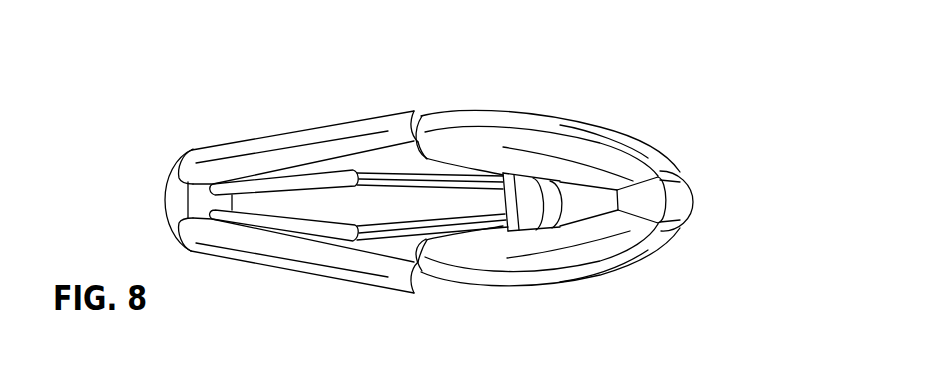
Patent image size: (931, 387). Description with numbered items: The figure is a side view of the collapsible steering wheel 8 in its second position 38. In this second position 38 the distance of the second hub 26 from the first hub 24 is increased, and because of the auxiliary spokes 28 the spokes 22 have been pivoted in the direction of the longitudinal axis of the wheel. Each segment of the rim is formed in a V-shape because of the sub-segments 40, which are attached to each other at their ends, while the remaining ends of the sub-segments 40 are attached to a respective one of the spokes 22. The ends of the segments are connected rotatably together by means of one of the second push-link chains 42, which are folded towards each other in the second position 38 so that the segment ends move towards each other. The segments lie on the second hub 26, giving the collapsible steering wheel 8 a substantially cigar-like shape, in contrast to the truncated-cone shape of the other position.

The collapsible steering wheel 8 is at (367, 103).
The spokes 22 is at (263, 153).
The first hub 24 is at (177, 188).
The second hub 26 is at (522, 200).
The auxiliary spokes 28 is at (268, 248).
The second position 38 is at (738, 203).
The sub-segments 40 is at (618, 131).
The second push-link chains 42 is at (420, 128).